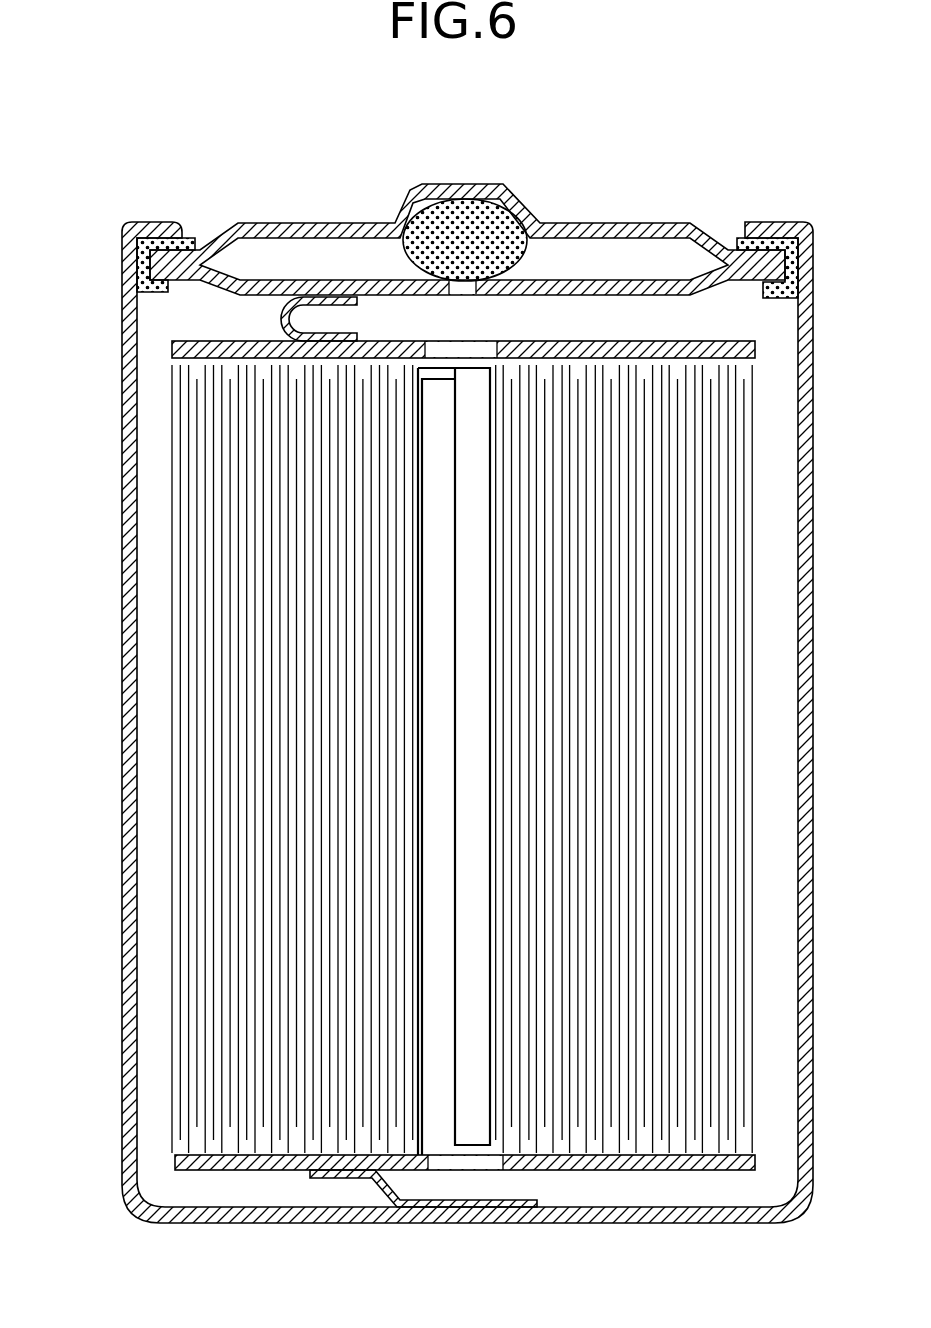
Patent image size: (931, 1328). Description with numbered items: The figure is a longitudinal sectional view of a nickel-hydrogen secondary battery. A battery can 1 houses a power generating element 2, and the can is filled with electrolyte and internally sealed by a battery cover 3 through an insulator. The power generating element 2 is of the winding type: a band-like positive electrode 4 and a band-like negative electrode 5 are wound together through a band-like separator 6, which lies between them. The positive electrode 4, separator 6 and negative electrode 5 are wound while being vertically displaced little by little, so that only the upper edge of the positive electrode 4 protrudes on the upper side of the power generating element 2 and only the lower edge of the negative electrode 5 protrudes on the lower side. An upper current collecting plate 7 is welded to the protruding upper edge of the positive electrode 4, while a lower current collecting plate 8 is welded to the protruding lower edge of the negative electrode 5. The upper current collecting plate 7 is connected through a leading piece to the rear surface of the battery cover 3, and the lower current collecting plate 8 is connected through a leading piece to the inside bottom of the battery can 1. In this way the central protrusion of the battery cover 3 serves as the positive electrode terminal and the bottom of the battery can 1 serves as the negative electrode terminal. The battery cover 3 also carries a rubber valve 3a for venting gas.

The battery can 1 is at (128, 496).
The power generating element 2 is at (450, 760).
The battery cover 3 is at (606, 232).
The rubber valve 3a is at (432, 215).
The positive electrode 4 is at (748, 415).
The negative electrode 5 is at (730, 475).
The separator 6 is at (758, 557).
The upper current collecting plate 7 is at (624, 348).
The lower current collecting plate 8 is at (630, 1172).